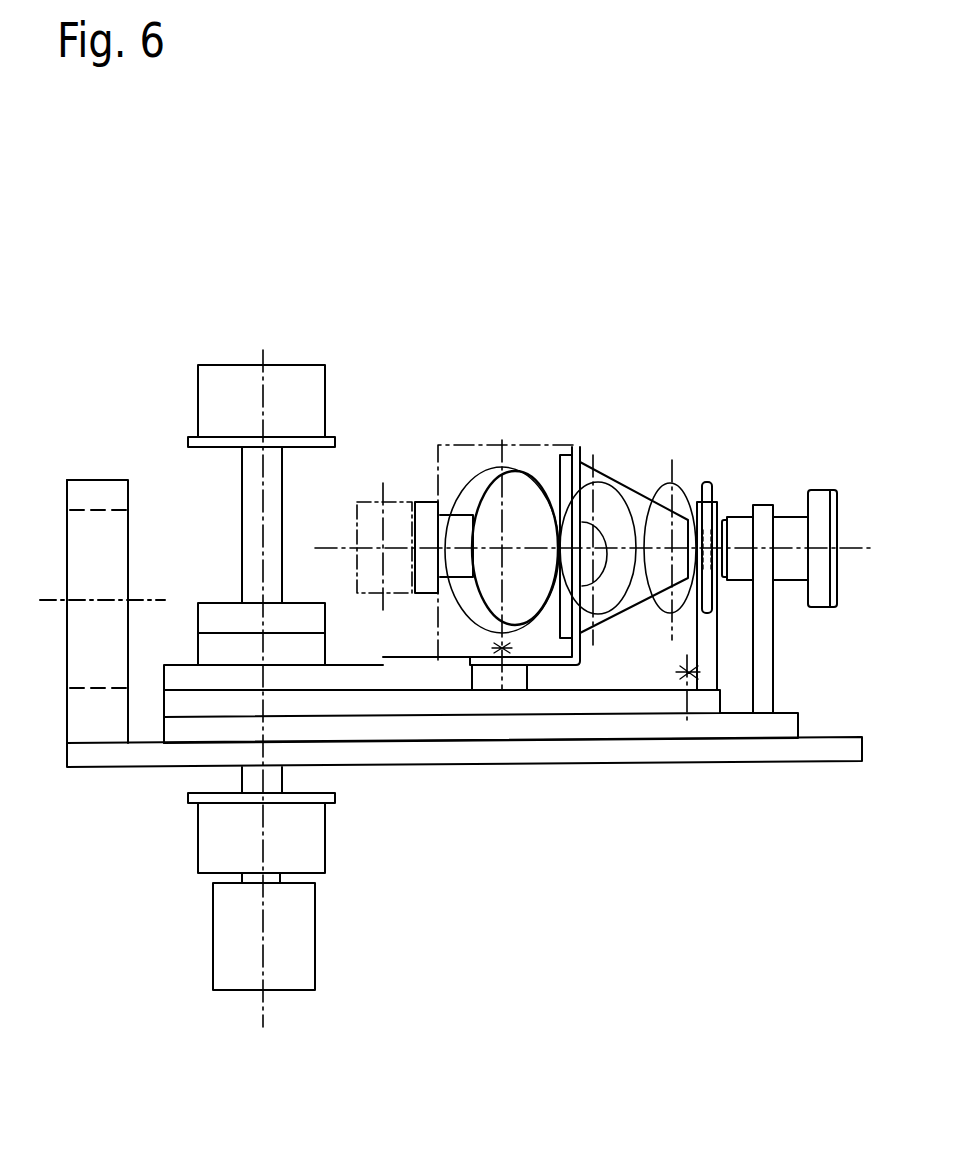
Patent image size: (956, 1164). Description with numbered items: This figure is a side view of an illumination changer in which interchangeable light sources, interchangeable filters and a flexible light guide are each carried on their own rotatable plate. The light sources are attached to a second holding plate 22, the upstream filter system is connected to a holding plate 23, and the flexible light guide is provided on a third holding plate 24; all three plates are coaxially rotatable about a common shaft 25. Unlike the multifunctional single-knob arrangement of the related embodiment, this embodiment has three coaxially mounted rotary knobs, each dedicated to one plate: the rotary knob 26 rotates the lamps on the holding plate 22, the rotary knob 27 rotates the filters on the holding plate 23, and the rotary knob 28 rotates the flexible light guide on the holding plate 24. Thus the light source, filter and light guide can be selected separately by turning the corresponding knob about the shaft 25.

The second holding plate 22 is at (470, 675).
The holding plate 23 is at (645, 700).
The third holding plate 24 is at (745, 725).
The shaft 25 is at (262, 1017).
The rotary knob 26 is at (223, 400).
The rotary knob 27 is at (297, 828).
The rotary knob 28 is at (300, 935).